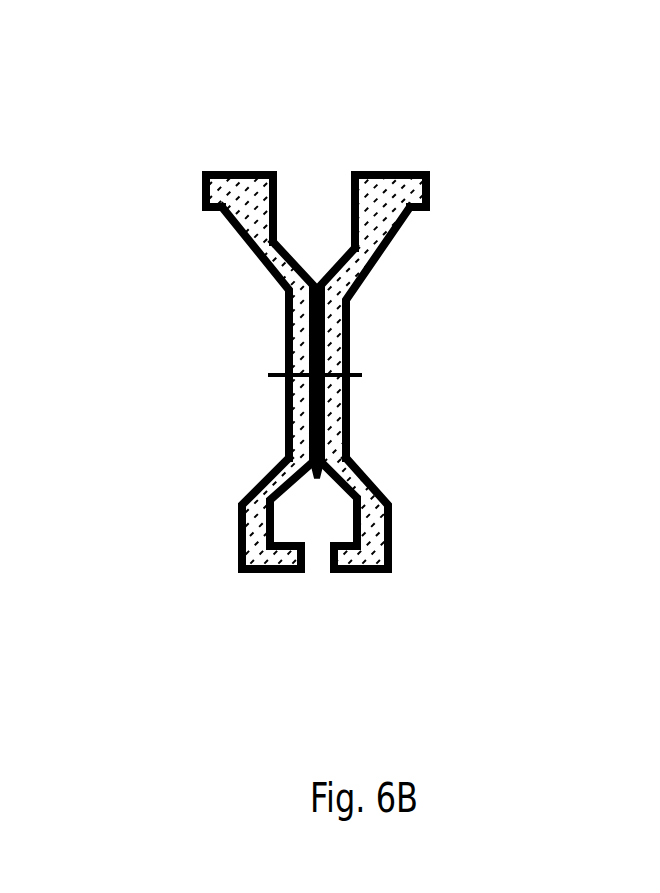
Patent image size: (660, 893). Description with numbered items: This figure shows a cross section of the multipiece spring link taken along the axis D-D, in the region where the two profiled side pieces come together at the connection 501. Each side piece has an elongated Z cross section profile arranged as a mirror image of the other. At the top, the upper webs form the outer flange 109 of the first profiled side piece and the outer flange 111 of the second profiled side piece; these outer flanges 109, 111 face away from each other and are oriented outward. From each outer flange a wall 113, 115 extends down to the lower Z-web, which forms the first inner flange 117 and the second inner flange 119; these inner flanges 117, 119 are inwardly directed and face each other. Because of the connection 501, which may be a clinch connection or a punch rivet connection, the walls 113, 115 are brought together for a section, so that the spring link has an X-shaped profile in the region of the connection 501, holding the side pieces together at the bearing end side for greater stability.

The outer flange 109 is at (205, 164).
The outer flange 111 is at (425, 174).
The wall 113 is at (242, 242).
The wall 115 is at (386, 243).
The connection 501 is at (362, 375).
The first inner flange 117 is at (240, 565).
The second inner flange 119 is at (392, 572).